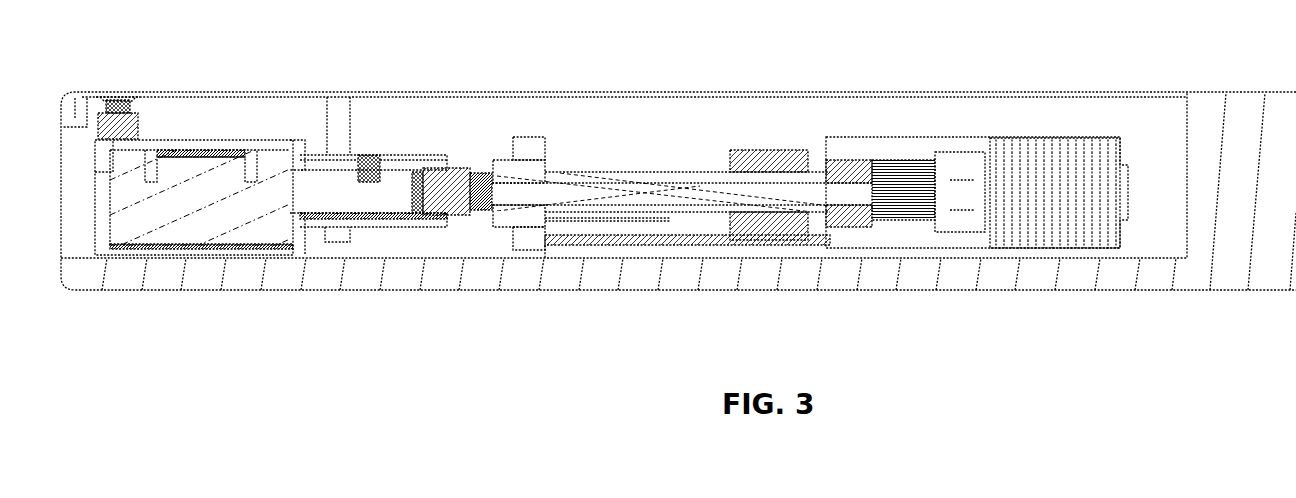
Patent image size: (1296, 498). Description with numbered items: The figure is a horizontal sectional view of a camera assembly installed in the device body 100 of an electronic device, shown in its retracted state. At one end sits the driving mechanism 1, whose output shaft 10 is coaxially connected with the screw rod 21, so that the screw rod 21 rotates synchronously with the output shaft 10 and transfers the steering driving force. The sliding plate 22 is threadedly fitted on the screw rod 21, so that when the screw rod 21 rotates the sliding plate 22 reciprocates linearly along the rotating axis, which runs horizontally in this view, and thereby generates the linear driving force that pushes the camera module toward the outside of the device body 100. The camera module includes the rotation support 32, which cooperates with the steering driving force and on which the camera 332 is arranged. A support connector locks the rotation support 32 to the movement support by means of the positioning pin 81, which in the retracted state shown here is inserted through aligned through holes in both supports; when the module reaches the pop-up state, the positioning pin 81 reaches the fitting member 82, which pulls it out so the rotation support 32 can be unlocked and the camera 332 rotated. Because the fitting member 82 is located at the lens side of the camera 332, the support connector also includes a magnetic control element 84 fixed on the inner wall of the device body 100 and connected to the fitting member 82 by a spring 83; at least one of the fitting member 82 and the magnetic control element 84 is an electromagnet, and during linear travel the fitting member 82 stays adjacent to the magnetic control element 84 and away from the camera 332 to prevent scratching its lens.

The device body 100 is at (1200, 93).
The driving mechanism 1 is at (998, 157).
The output shaft 10 is at (840, 192).
The screw rod 21 is at (622, 182).
The sliding plate 22 is at (773, 158).
The rotation support 32 is at (382, 218).
The camera 332 is at (240, 157).
The positioning pin 81 is at (376, 160).
The fitting member 82 is at (138, 120).
The spring 83 is at (133, 110).
The magnetic control element 84 is at (120, 97).